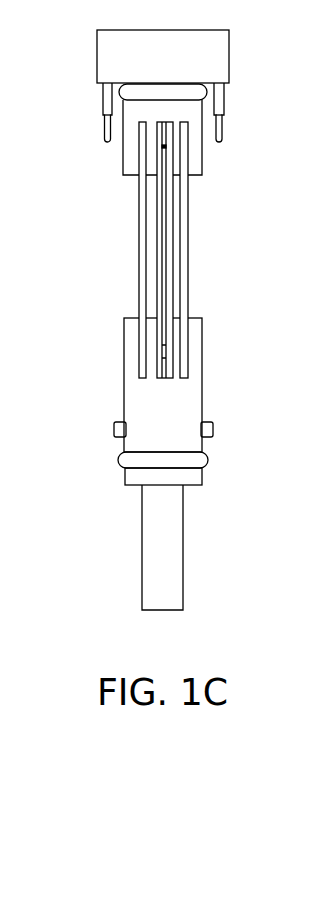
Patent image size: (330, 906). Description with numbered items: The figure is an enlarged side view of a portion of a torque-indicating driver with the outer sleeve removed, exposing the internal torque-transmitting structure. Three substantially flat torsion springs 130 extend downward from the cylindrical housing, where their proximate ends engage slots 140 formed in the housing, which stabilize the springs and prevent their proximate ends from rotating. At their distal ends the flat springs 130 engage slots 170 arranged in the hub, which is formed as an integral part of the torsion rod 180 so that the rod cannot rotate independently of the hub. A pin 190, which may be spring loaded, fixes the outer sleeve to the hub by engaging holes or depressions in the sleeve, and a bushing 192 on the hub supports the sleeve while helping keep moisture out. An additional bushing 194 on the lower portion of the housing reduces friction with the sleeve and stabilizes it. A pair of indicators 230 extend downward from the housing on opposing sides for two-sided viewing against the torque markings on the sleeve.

The flat torsion springs 130 is at (139, 233).
The slots 140 is at (135, 174).
The slots 170 is at (139, 367).
The torsion rod 180 is at (183, 530).
The pin 190 is at (114, 424).
The bushing 192 is at (207, 460).
The bushing 194 is at (197, 93).
The indicators 230 is at (103, 122).